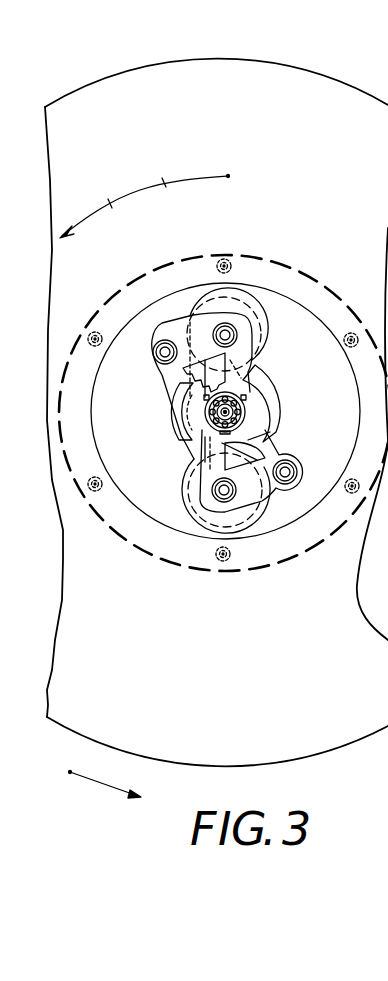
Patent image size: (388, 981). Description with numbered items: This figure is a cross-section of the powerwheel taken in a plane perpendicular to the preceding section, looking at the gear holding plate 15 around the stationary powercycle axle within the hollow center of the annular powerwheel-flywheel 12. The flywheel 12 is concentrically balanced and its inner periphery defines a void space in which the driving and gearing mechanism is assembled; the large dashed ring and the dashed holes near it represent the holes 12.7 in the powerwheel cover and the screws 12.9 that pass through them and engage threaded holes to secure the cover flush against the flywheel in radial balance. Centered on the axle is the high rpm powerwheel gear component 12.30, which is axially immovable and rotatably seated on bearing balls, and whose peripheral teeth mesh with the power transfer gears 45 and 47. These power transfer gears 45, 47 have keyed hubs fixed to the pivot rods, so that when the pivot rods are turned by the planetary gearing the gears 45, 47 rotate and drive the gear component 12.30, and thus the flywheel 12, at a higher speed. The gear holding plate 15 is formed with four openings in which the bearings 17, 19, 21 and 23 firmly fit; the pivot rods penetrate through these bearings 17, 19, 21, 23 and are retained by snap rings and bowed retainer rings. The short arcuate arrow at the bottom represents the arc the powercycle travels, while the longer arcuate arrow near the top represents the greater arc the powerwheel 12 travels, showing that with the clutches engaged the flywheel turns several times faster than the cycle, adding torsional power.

The powerwheel-flywheel 12 is at (229, 658).
The powerwheel gear component 12.30 is at (187, 422).
The hole 12.7 is at (233, 553).
The screw 12.9 is at (223, 444).
The gear holding plate 15 is at (282, 402).
The bearing 17 is at (164, 365).
The bearing 19 is at (214, 331).
The bearing 21 is at (286, 461).
The bearing 23 is at (236, 489).
The power transfer gear 45 is at (268, 333).
The power transfer gear 47 is at (181, 498).